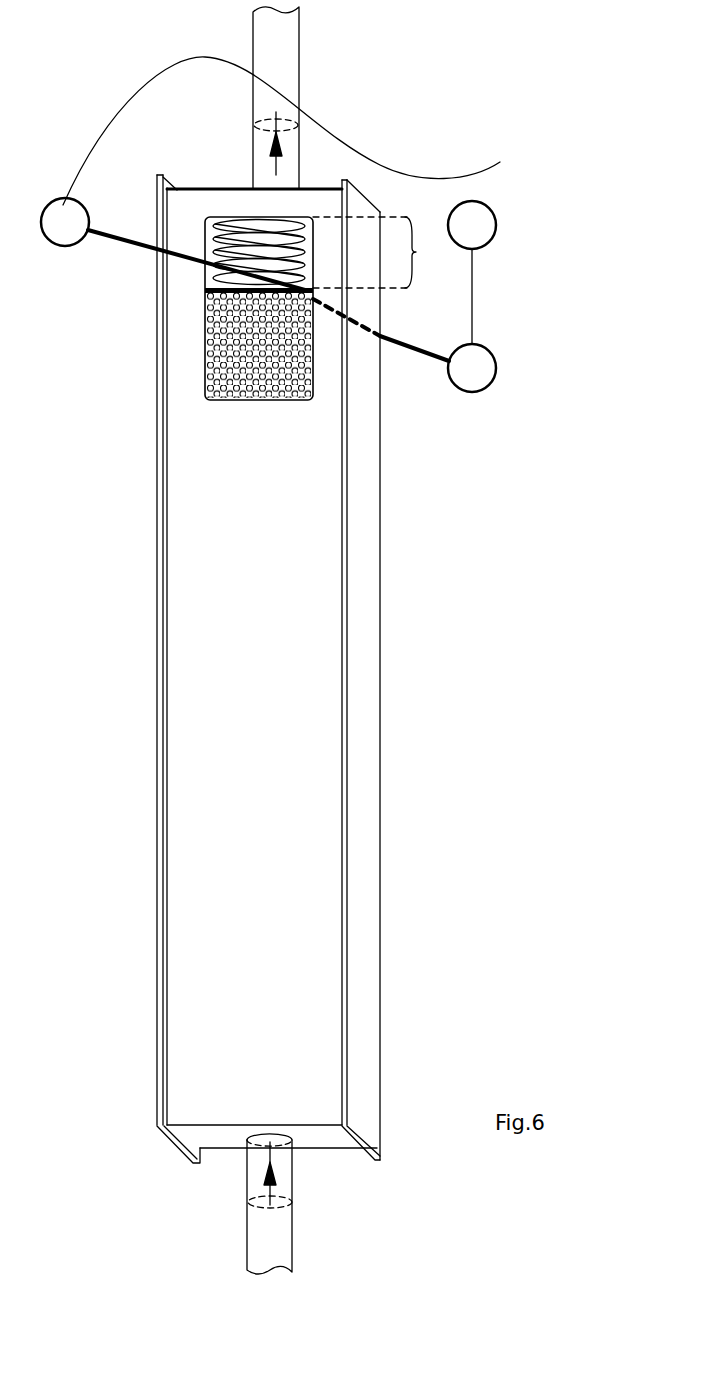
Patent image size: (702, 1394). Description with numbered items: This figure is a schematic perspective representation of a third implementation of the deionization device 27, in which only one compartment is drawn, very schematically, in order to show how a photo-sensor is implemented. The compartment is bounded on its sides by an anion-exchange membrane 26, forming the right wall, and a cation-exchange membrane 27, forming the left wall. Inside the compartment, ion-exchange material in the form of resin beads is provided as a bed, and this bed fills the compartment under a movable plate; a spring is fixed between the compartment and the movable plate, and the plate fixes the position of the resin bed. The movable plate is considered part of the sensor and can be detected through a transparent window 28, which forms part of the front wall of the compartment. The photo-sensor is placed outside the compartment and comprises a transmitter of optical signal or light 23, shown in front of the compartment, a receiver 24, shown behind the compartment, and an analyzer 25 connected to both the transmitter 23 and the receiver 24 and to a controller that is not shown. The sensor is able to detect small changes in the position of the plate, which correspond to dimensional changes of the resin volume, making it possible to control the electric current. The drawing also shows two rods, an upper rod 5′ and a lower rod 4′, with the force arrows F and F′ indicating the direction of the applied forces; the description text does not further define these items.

The lower rod 4′ is at (285, 1222).
The upper rod 5′ is at (287, 17).
The transmitter of optical signal or light 23 is at (298, 131).
The receiver 24 is at (488, 367).
The analyzer 25 is at (488, 224).
The anion-exchange membrane 26 is at (360, 766).
The cation-exchange membrane 27 is at (175, 1142).
The transparent window 28 is at (312, 385).
The force F is at (253, 1183).
The reaction force F′ is at (276, 165).